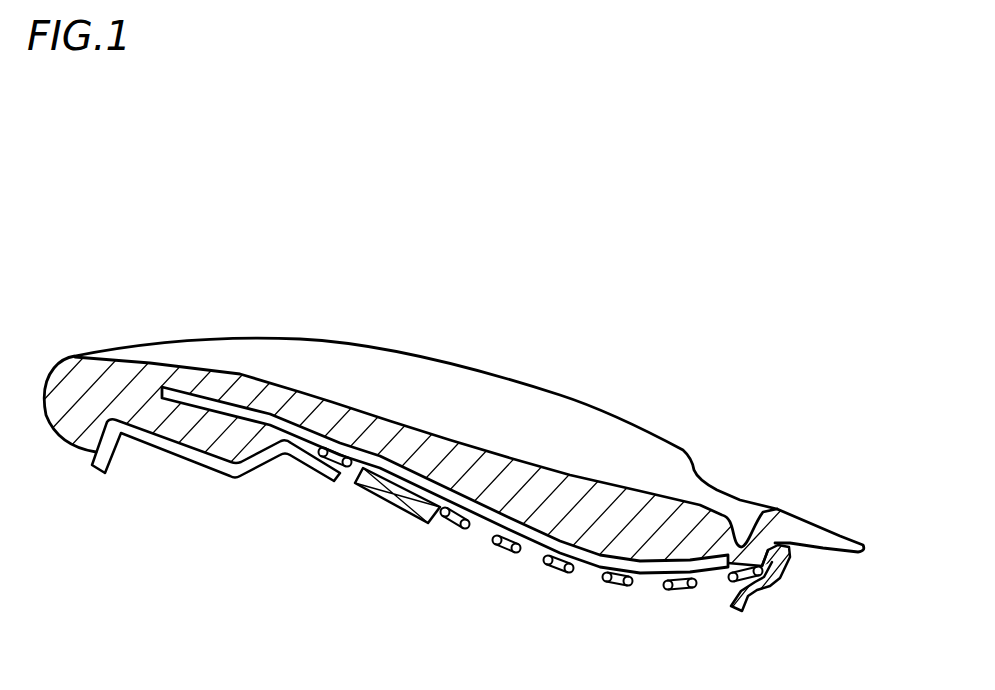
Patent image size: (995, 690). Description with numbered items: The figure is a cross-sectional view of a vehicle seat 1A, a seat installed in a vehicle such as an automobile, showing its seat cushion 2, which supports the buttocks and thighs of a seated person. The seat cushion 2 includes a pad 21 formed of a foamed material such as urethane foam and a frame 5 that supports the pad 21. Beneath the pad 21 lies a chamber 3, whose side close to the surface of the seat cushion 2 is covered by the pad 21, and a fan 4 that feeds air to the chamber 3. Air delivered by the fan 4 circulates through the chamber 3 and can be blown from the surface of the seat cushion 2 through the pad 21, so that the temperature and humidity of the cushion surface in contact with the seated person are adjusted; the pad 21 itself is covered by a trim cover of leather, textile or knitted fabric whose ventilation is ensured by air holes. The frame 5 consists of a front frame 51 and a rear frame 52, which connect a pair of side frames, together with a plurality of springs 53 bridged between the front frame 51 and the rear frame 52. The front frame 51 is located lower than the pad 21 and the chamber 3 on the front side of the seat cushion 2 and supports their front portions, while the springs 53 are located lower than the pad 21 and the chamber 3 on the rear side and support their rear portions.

The vehicle seat 1A is at (281, 109).
The seat cushion 2 is at (334, 395).
The pad 21 is at (428, 447).
The chamber 3 is at (493, 523).
The fan 4 is at (393, 501).
The frame 5 is at (453, 478).
The front frame 51 is at (172, 457).
The rear frame 52 is at (770, 590).
The springs 53 is at (610, 580).